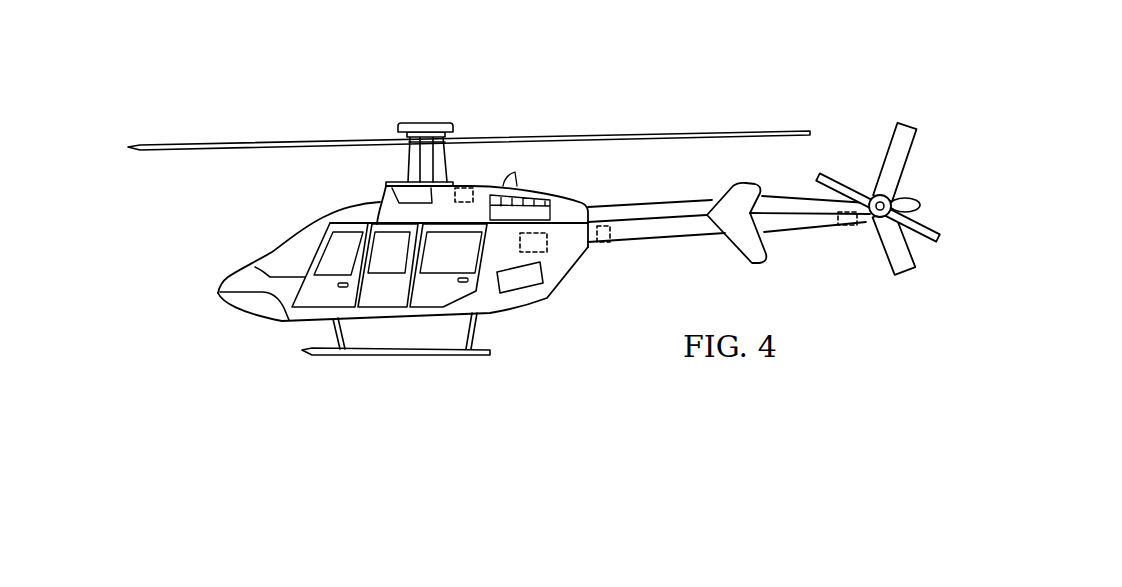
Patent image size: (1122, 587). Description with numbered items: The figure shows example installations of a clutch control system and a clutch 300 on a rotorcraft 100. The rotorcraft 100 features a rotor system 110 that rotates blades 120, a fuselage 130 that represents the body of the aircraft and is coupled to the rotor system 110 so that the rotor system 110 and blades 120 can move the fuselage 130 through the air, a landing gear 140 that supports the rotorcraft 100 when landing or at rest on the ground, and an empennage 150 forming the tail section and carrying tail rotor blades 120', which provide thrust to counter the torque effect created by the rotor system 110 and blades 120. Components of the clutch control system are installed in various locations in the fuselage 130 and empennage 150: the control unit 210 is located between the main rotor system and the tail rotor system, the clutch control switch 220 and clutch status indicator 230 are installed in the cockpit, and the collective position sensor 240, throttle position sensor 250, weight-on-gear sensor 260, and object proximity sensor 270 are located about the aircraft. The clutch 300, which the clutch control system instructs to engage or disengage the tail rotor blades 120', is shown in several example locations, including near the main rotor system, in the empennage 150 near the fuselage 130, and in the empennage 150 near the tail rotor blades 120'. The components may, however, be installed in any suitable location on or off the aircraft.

The rotorcraft 100 is at (299, 88).
The rotor system 110 is at (425, 121).
The blades 120 is at (469, 119).
The tail rotor blades 120' is at (916, 199).
The fuselage 130 is at (233, 308).
The landing gear 140 is at (383, 356).
The empennage 150 is at (657, 242).
The control unit 210 is at (531, 255).
The clutch control switch 220 is at (227, 261).
The clutch status indicator 230 is at (268, 262).
The collective position sensor 240 is at (372, 152).
The throttle position sensor 250 is at (407, 157).
The weight-on-gear sensor 260 is at (333, 331).
The object proximity sensor 270 is at (922, 199).
The clutch 300 is at (466, 188).